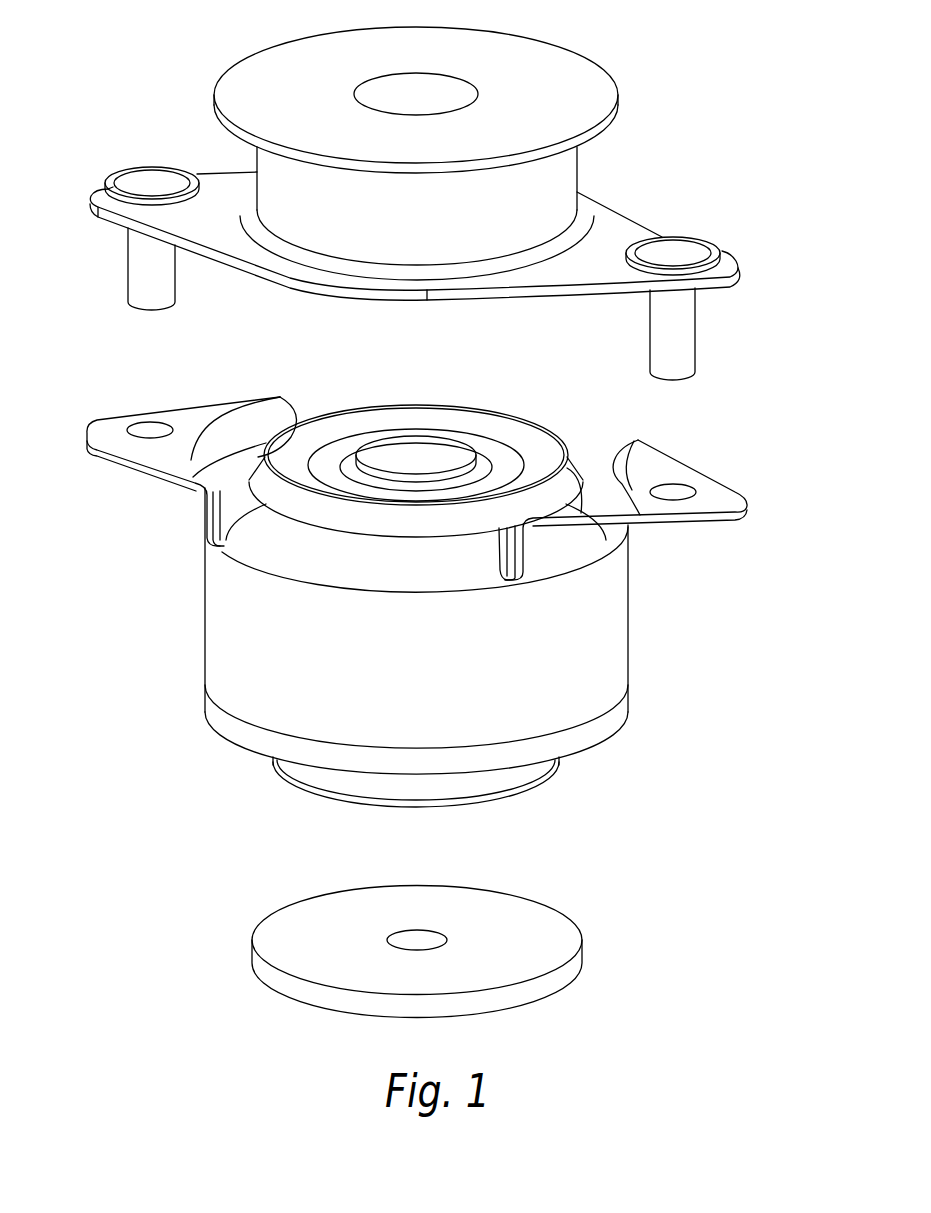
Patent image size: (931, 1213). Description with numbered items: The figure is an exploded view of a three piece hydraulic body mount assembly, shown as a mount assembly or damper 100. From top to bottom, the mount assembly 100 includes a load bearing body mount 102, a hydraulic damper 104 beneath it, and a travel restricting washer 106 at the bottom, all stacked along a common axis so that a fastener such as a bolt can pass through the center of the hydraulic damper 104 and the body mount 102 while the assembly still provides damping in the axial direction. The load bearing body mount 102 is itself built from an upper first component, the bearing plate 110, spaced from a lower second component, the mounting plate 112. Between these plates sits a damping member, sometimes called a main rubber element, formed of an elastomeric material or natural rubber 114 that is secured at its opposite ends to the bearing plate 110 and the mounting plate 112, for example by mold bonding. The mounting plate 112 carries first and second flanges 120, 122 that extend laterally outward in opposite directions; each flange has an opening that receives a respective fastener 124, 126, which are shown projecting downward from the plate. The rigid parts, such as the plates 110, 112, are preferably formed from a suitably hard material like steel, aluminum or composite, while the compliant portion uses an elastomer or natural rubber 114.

The mount assembly 100 is at (776, 23).
The load bearing body mount 102 is at (118, 90).
The hydraulic damper 104 is at (172, 572).
The travel restricting washer 106 is at (220, 908).
The bearing plate 110 is at (568, 74).
The mounting plate 112 is at (621, 220).
The elastomeric material or natural rubber 114 is at (262, 183).
The first flange 120 is at (107, 186).
The second flange 122 is at (726, 258).
The fastener 124 is at (137, 267).
The fastener 126 is at (680, 250).